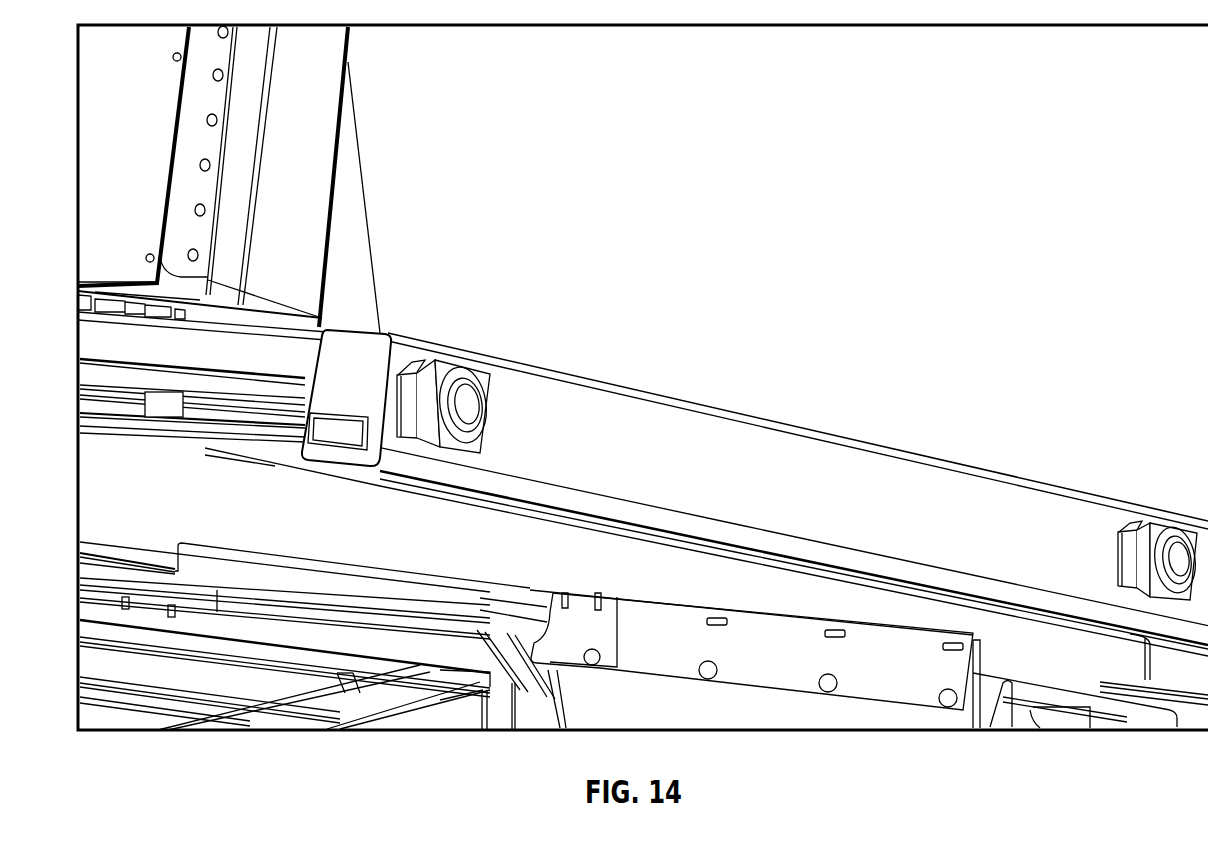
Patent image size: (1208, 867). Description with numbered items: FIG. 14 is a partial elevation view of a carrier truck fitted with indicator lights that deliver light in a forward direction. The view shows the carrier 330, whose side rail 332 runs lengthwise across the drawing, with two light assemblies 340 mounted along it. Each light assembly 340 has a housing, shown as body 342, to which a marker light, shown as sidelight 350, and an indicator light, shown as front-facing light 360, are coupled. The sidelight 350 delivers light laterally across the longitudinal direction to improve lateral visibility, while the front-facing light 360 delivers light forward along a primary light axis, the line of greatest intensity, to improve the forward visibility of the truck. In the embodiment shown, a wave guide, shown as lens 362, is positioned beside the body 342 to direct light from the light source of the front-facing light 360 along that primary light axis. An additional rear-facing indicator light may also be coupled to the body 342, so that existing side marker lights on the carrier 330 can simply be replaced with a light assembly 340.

The carrier 330 is at (822, 447).
The upper surface of side rail 332 is at (967, 460).
The light assembly 340 is at (466, 433).
The body 342 is at (483, 438).
The sidelight 350 is at (472, 410).
The front-facing light 360 is at (428, 412).
The lens 362 is at (403, 398).